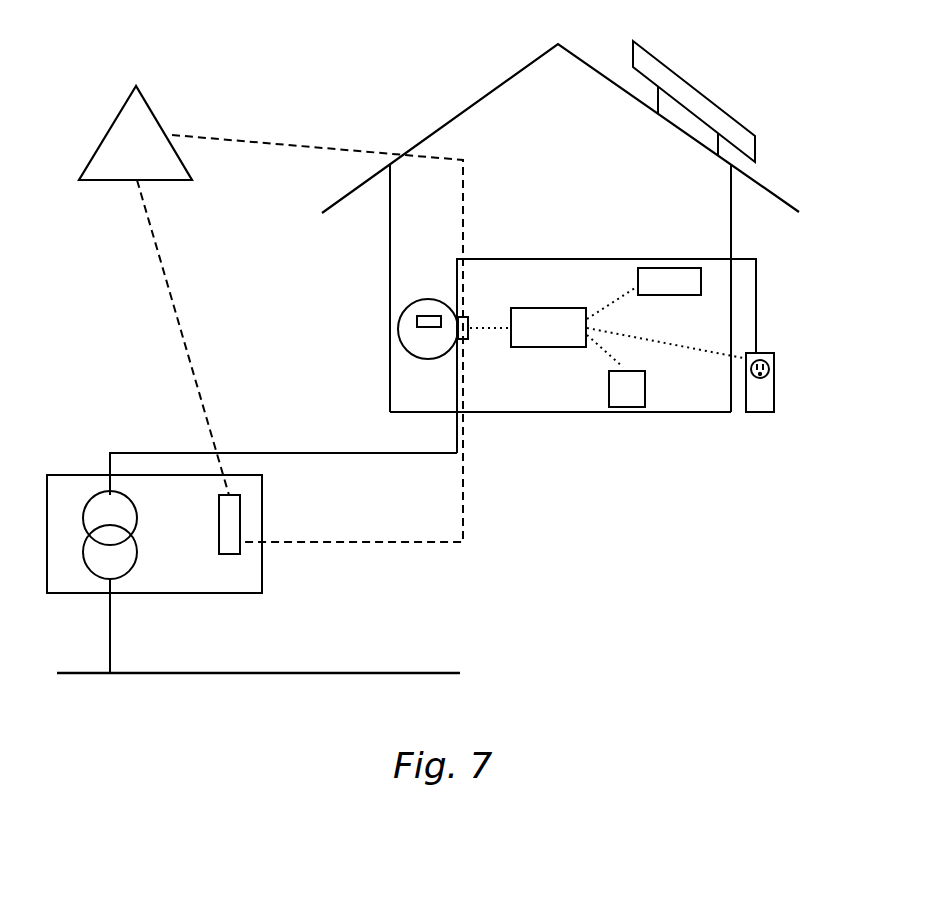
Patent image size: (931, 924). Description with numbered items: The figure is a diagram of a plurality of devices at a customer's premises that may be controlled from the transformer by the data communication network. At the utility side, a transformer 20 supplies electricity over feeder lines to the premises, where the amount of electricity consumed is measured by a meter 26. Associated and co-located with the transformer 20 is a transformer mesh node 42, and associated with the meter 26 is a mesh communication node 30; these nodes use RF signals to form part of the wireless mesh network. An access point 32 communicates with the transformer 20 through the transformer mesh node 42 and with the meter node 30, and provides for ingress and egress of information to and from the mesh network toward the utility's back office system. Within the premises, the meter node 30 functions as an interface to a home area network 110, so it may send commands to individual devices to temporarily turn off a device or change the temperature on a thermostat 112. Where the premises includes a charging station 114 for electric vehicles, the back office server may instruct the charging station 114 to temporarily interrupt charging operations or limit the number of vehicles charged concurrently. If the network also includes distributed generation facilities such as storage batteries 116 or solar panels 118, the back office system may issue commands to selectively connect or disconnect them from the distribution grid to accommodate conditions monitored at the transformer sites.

The transformer 20 is at (74, 475).
The meter 26 is at (432, 360).
The mesh communication node 30 is at (470, 323).
The access point 32 is at (157, 117).
The transformer mesh node 42 is at (240, 523).
The home area network 110 is at (572, 308).
The thermostat 112 is at (683, 268).
The charging station 114 is at (776, 372).
The storage battery 116 is at (634, 407).
The solar panel 118 is at (722, 110).